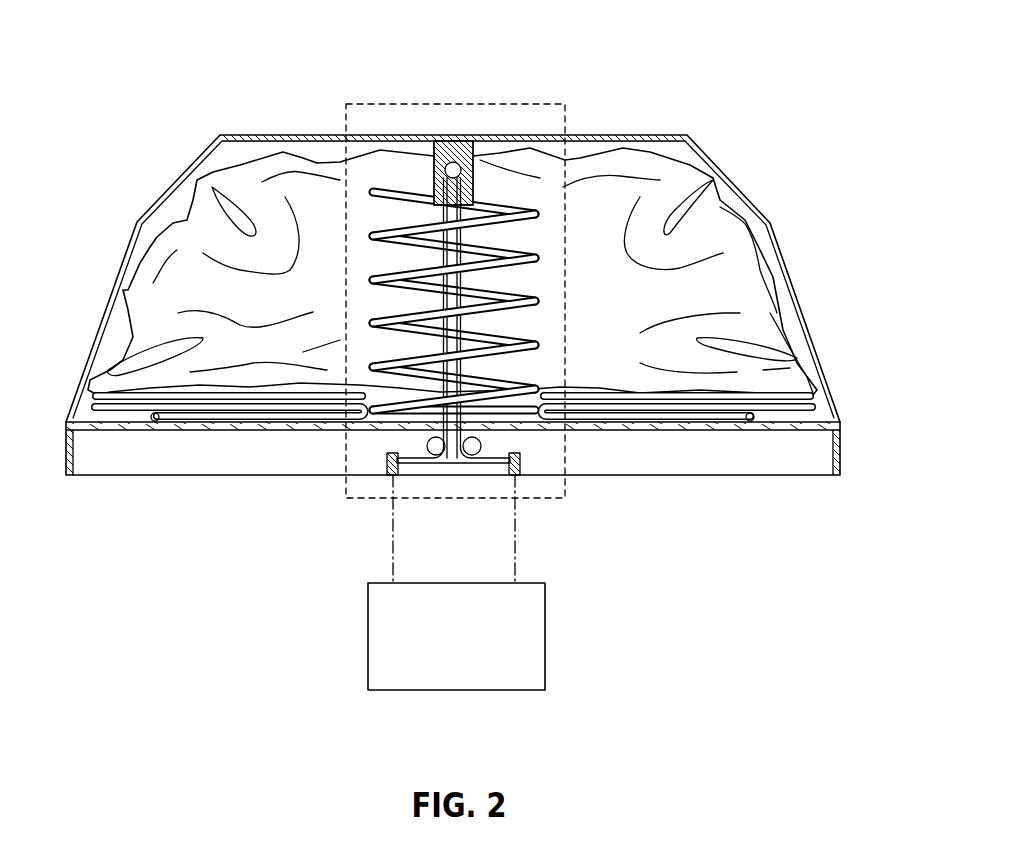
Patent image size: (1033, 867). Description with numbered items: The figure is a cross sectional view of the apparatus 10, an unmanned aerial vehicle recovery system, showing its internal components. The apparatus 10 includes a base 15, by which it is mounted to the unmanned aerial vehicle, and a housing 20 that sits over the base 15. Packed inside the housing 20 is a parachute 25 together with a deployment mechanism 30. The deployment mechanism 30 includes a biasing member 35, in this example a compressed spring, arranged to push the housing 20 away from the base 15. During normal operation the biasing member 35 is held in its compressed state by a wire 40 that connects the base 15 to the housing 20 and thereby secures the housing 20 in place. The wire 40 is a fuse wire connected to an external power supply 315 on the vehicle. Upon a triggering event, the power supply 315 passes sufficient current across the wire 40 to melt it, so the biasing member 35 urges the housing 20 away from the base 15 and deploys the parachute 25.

The apparatus 10 is at (648, 100).
The base 15 is at (842, 450).
The housing 20 is at (820, 360).
The parachute 25 is at (745, 263).
The deployment mechanism 30 is at (523, 104).
The biasing member 35 is at (385, 190).
The wire 40 is at (393, 498).
The power supply 315 is at (436, 650).